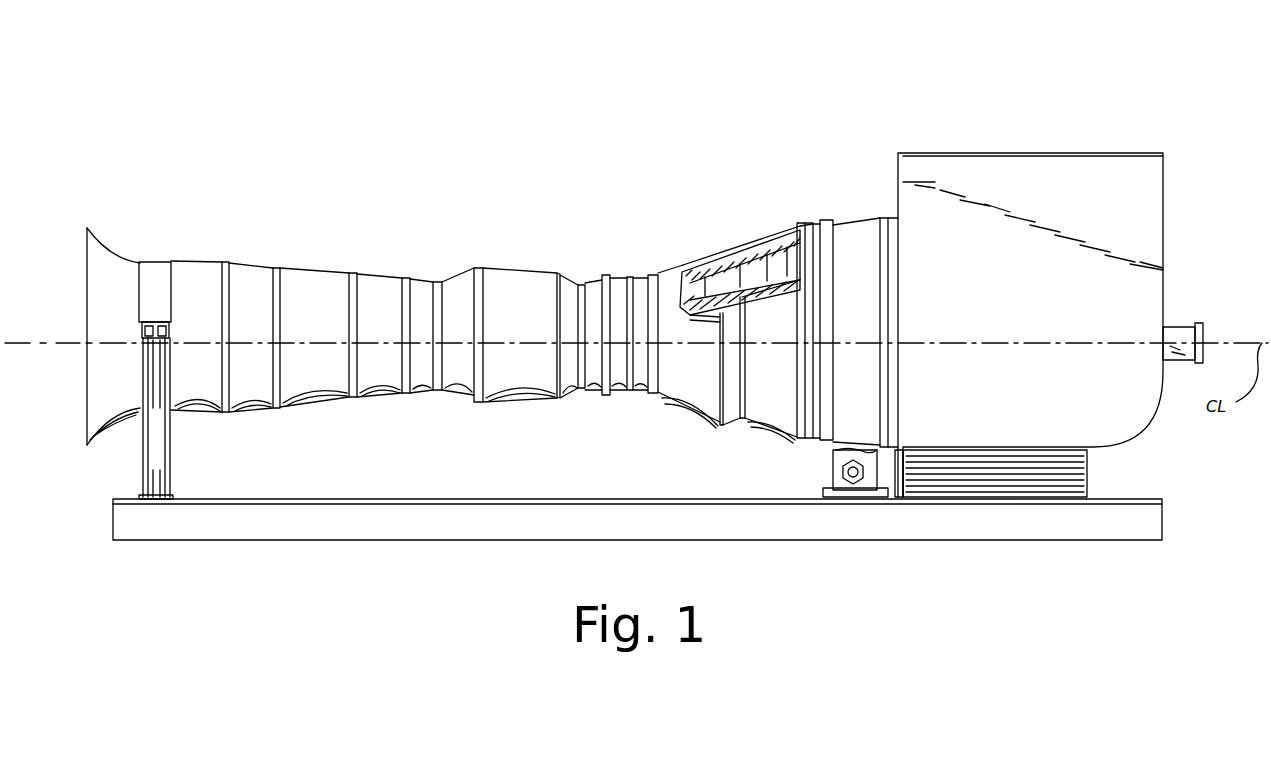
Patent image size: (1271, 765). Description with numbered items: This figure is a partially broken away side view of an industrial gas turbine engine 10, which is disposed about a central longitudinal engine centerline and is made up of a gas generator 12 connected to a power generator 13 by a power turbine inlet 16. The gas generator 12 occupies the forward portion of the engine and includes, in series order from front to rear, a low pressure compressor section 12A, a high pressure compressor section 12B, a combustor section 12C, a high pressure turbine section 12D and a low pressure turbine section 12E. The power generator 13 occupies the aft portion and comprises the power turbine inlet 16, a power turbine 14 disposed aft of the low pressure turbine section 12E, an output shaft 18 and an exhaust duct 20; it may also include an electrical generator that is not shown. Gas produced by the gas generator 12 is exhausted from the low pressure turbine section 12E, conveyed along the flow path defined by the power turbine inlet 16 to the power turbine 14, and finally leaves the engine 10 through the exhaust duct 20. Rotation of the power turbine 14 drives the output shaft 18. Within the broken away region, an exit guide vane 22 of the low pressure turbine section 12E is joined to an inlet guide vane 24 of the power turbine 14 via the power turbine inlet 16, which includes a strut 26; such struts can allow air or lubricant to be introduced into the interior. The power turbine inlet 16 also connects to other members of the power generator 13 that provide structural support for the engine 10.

The gas turbine engine 10 is at (515, 108).
The gas generator 12 is at (713, 217).
The low pressure compressor section 12A is at (197, 278).
The high pressure compressor section 12B is at (425, 290).
The combustor section 12C is at (543, 326).
The high pressure turbine section 12D is at (592, 290).
The low pressure turbine section 12E is at (710, 362).
The power generator 13 is at (1270, 112).
The power turbine 14 is at (870, 292).
The power turbine inlet 16 is at (750, 236).
The output shaft 18 is at (1208, 330).
The exhaust duct 20 is at (1033, 332).
The exit guide vane 22 is at (690, 270).
The inlet guide vane 24 is at (790, 228).
The strut 26 is at (757, 273).